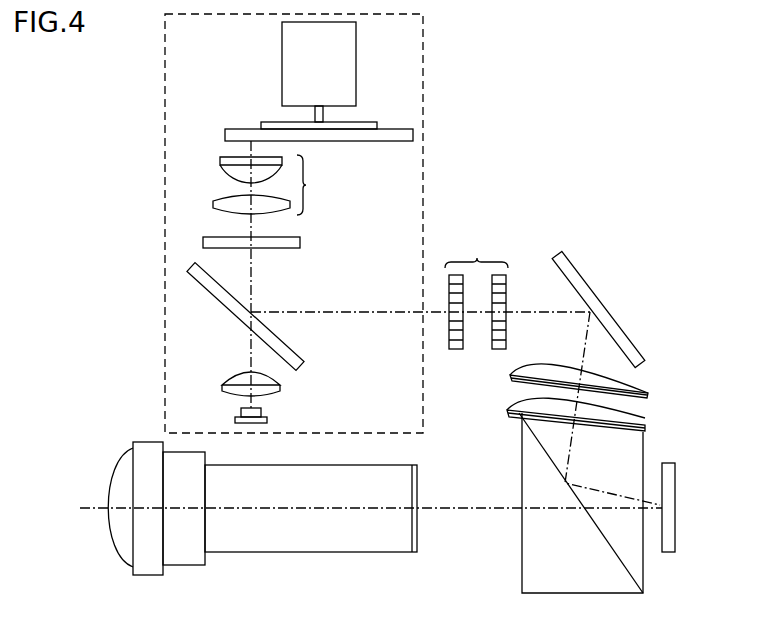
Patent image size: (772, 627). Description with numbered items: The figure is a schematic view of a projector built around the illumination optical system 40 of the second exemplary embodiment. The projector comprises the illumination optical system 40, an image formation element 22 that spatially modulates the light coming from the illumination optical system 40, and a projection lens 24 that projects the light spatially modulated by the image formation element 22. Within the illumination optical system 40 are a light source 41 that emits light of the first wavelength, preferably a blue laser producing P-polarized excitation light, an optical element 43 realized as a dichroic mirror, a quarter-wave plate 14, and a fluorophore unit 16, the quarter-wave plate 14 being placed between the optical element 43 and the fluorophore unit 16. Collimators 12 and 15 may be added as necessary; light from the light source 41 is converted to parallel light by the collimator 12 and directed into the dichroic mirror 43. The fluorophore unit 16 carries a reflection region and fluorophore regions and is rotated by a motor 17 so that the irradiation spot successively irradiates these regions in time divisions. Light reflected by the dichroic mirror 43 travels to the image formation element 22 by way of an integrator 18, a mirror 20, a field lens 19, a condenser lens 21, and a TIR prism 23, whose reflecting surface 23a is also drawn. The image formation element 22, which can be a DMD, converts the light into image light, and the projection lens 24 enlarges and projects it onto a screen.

The illumination optical system 40 is at (163, 62).
The motor 17 is at (293, 37).
The fluorophore unit 16 is at (397, 133).
The collimator 15 is at (273, 185).
The quarter-wave plate 14 is at (293, 249).
The optical element 43 is at (201, 279).
The collimator 12 is at (232, 380).
The light source 41 is at (260, 413).
The integrator 18 is at (476, 294).
The mirror 20 is at (628, 347).
The field lens 19 is at (650, 385).
The condenser lens 21 is at (647, 420).
The TIR prism 23 is at (532, 573).
The reflecting surface of prism 23a is at (610, 545).
The image formation element 22 is at (670, 538).
The projection lens 24 is at (270, 542).